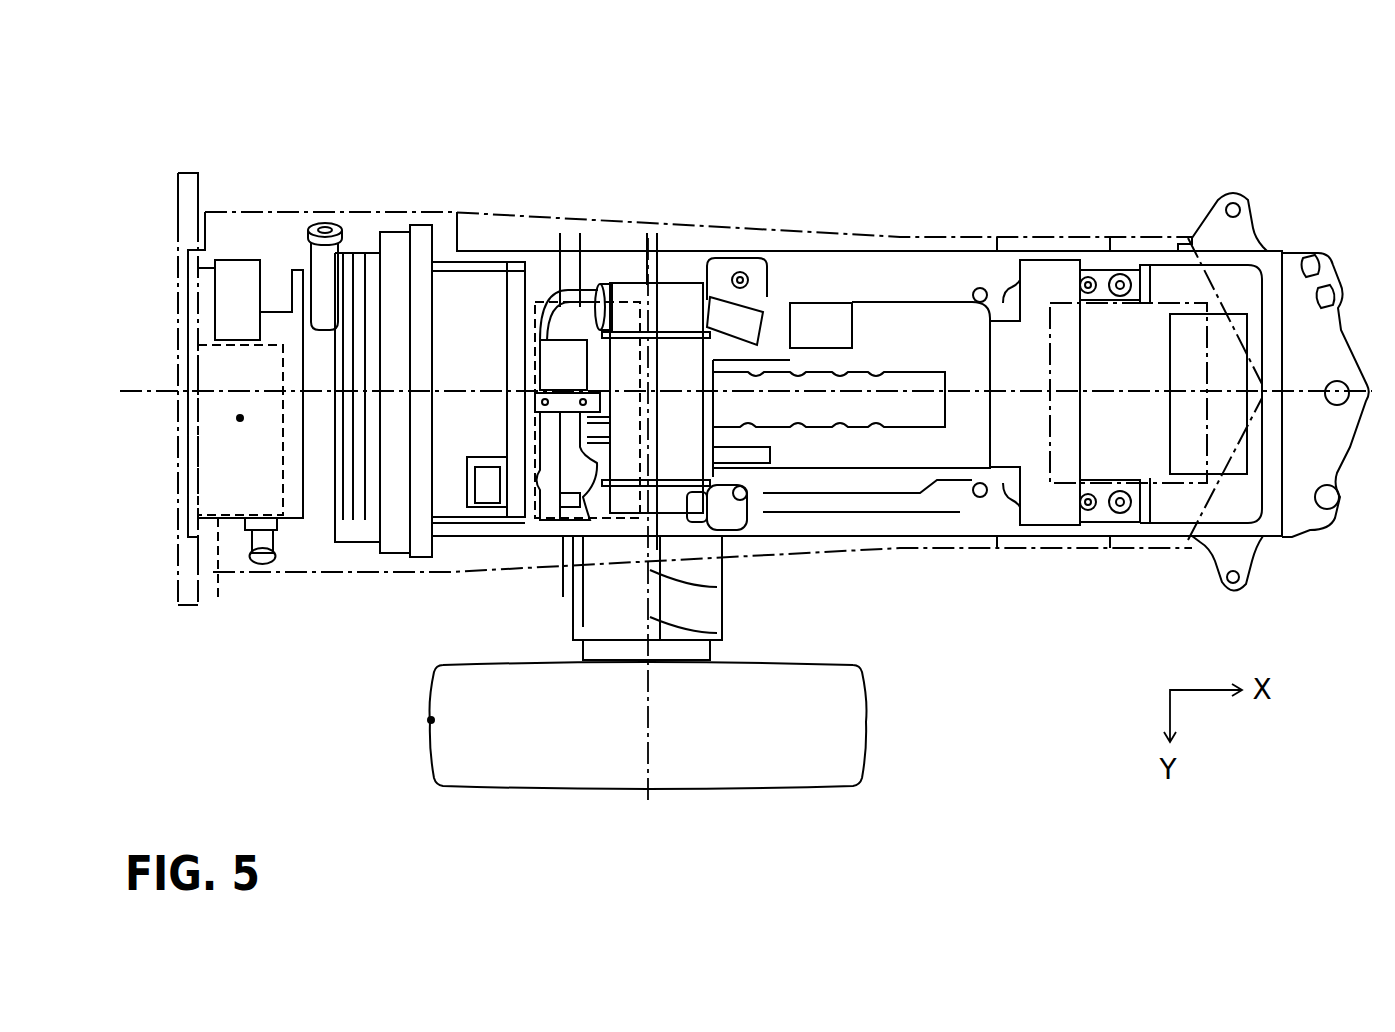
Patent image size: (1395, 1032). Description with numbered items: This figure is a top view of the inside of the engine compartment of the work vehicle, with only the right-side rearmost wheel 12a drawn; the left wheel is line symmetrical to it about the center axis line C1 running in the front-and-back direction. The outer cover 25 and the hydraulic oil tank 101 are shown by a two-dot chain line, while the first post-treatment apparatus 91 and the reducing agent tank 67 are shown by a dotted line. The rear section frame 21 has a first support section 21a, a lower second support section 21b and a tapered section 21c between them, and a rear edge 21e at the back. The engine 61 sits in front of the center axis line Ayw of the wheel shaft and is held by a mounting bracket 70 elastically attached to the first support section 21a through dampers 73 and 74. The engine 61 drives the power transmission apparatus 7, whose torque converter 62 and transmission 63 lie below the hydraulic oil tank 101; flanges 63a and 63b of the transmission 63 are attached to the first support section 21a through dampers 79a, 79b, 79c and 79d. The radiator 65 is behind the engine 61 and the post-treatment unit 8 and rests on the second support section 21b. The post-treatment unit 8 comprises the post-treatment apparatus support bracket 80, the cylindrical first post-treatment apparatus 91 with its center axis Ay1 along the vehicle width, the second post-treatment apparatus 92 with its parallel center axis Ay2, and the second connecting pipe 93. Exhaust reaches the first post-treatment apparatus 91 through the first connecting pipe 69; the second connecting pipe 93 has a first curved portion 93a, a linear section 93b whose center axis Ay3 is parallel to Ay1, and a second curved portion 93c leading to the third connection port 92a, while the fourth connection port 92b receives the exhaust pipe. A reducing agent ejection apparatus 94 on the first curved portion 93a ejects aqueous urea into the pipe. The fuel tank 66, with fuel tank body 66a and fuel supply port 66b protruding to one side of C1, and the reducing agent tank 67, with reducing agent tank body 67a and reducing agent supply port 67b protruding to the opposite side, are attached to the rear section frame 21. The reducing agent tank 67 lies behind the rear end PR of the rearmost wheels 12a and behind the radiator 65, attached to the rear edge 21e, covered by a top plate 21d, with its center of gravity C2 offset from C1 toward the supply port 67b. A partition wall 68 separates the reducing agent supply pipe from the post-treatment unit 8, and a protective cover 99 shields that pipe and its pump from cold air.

The power transmission apparatus 7 is at (1166, 604).
The post-treatment unit 8 is at (508, 88).
The rearmost wheels 12a is at (867, 720).
The rear section frame 21 is at (1261, 575).
The first support section 21a is at (950, 267).
The second support section 21b is at (398, 222).
The tapered section 21c is at (450, 320).
The top plate 21d is at (232, 303).
The rear edge 21e is at (182, 438).
The outer cover 25 is at (887, 547).
The engine 61 is at (835, 353).
The torque converter 62 is at (1005, 407).
The transmission 63 is at (1180, 474).
The flange 63a is at (1170, 357).
The flange 63b is at (1133, 280).
The radiator 65 is at (373, 548).
The fuel tank 66 is at (297, 82).
The fuel tank body 66a is at (443, 323).
The fuel supply port 66b is at (306, 218).
The reducing agent tank 67 is at (277, 667).
The reducing agent tank body 67a is at (218, 600).
The reducing agent supply port 67b is at (260, 564).
The partition wall 68 is at (488, 497).
The first connecting pipe 69 is at (870, 385).
The mounting bracket 70 is at (820, 303).
The damper 73 is at (757, 507).
The damper 74 is at (777, 307).
The damper 79a is at (1120, 493).
The damper 79b is at (1090, 493).
The damper 79c is at (1115, 274).
The damper 79d is at (1082, 276).
The post-treatment apparatus support bracket 80 is at (762, 280).
The first post-treatment apparatus 91 is at (605, 335).
The second post-treatment apparatus 92 is at (680, 307).
The third connection port 92a is at (657, 283).
The fourth connection port 92b is at (693, 505).
The second connecting pipe 93 is at (441, 130).
The first curved portion 93a is at (550, 373).
The linear section 93b is at (553, 310).
The second curved portion 93c is at (568, 497).
The reducing agent ejection apparatus 94 is at (600, 373).
The protective cover 99 is at (467, 533).
The hydraulic oil tank 101 is at (1210, 350).
The center axis line C1 is at (1368, 393).
The center of gravity C2 is at (240, 430).
The rear end PR is at (431, 720).
The center axis Ay1 is at (583, 627).
The center axis Ay2 is at (717, 587).
The center axis Ay3 is at (563, 590).
The center axis line of the shaft Ayw is at (717, 633).